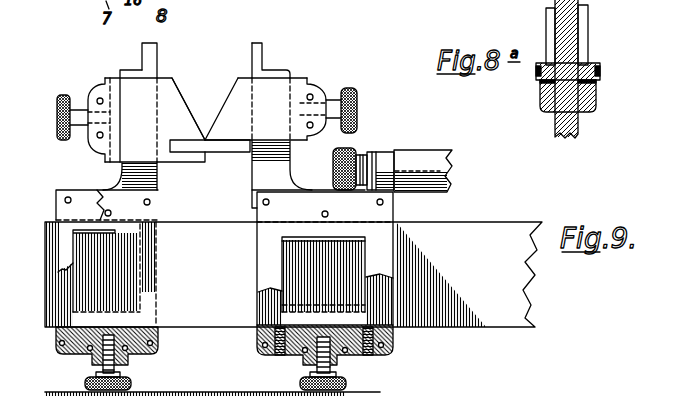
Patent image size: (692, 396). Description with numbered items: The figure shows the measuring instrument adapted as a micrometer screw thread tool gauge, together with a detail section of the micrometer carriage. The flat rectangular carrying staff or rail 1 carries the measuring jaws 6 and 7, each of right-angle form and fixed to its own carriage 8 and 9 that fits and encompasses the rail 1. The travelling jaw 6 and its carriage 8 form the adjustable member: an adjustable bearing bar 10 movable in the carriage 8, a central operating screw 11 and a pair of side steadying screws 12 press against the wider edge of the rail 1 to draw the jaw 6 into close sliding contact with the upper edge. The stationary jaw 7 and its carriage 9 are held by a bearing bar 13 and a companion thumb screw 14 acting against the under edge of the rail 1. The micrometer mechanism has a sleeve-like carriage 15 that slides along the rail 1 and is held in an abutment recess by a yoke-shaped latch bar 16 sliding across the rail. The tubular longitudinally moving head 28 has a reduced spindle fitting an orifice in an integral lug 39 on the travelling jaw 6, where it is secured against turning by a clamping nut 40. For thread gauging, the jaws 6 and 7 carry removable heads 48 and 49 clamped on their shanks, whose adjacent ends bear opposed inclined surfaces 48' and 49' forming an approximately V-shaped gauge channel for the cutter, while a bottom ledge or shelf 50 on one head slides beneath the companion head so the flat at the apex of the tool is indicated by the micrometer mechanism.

In FIG. 9, the carrying staff or rail 1 is at (45, 270).
In FIG. 8A, the carrying staff or rail 1 is at (568, 25).
In FIG. 9, the measuring jaw 6 is at (268, 70).
In FIG. 9, the measuring jaw 7 is at (142, 60).
In FIG. 9, the carriage 8 is at (257, 249).
In FIG. 9, the carriage 9 is at (66, 227).
In FIG. 9, the adjustable bearing bar 10 is at (318, 326).
In FIG. 9, the central operating screw 11 is at (348, 381).
In FIG. 9, the side steadying screws 12 is at (276, 356).
In FIG. 9, the bearing bar 13 is at (106, 326).
In FIG. 9, the thumb screw 14 is at (130, 383).
In FIG. 8A, the carriage 15 is at (552, 32).
In FIG. 8A, the latch bar 16 is at (545, 97).
In FIG. 9, the longitudinally moving head 28 is at (423, 171).
In FIG. 9, the lug 39 is at (381, 154).
In FIG. 9, the clamping nut 40 is at (333, 173).
In FIG. 9, the removable head 48 is at (281, 109).
In FIG. 9, the inclined surface 48' is at (221, 105).
In FIG. 9, the removable head 49 is at (131, 120).
In FIG. 9, the inclined surface 49' is at (188, 103).
In FIG. 9, the bottom ledge or shelf 50 is at (221, 148).